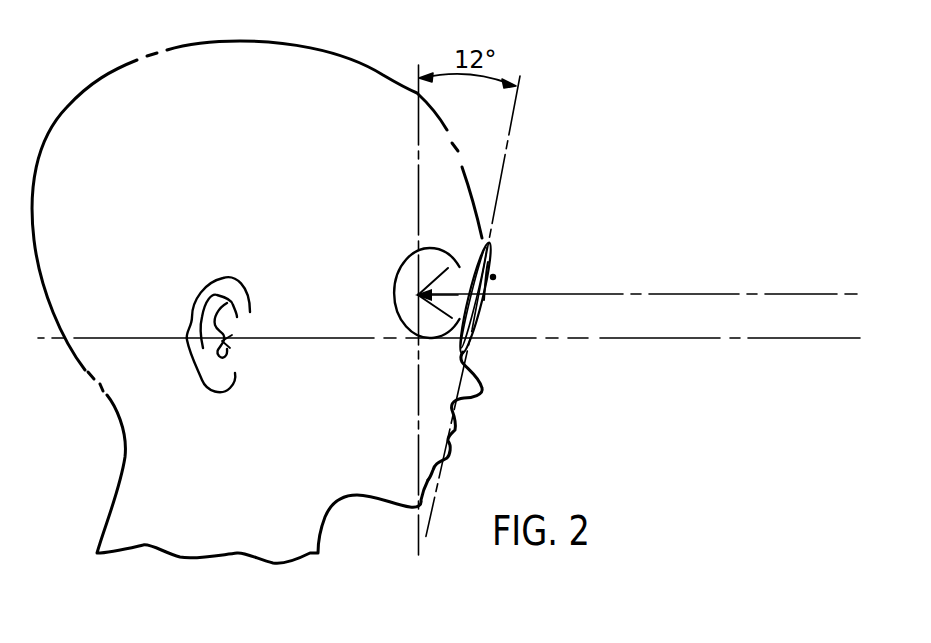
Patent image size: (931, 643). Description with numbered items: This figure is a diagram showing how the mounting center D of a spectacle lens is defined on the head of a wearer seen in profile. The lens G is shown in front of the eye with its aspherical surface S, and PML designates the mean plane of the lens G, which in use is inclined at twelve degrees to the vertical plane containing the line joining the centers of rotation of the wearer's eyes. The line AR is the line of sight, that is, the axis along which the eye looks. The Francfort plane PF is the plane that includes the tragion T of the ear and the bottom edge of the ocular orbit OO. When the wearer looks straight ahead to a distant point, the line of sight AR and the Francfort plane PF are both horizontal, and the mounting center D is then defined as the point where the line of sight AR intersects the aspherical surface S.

The tragion T is at (192, 317).
The ocular orbit OO is at (402, 280).
The mean plane of the lens PML is at (504, 162).
The lens G is at (494, 275).
The mounting center D is at (490, 288).
The aspherical surface S is at (480, 323).
The line of sight AR is at (750, 294).
The Francfort plane PF is at (765, 338).